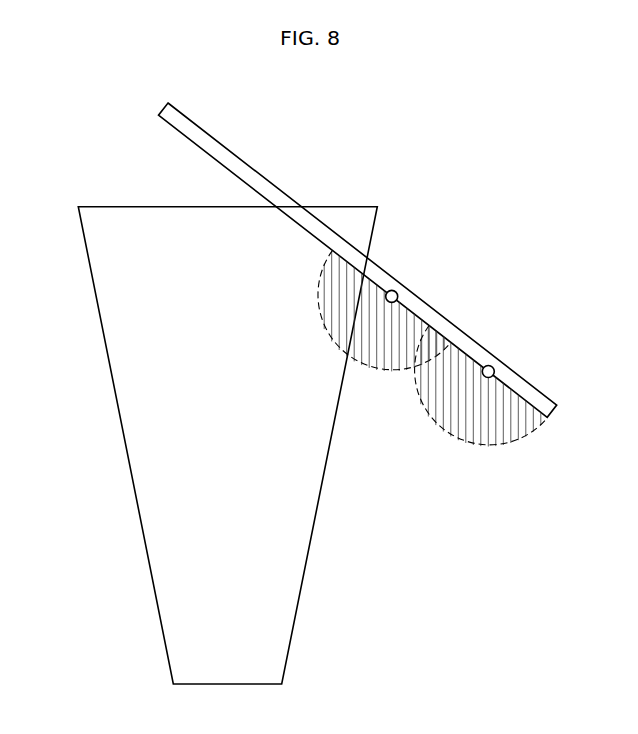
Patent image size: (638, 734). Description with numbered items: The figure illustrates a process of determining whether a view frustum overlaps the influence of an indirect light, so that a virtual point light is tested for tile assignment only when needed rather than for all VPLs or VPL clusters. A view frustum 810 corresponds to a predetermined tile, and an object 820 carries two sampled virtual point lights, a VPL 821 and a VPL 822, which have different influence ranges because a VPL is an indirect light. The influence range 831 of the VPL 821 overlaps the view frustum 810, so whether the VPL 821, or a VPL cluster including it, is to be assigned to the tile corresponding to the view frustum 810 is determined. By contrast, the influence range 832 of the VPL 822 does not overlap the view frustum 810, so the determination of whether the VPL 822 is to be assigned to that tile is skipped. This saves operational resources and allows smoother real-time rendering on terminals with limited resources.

The view frustum 810 is at (145, 412).
The object 820 is at (192, 118).
The VPL 821 is at (396, 289).
The VPL 822 is at (491, 364).
The influence range 831 is at (386, 355).
The influence range 832 is at (502, 428).